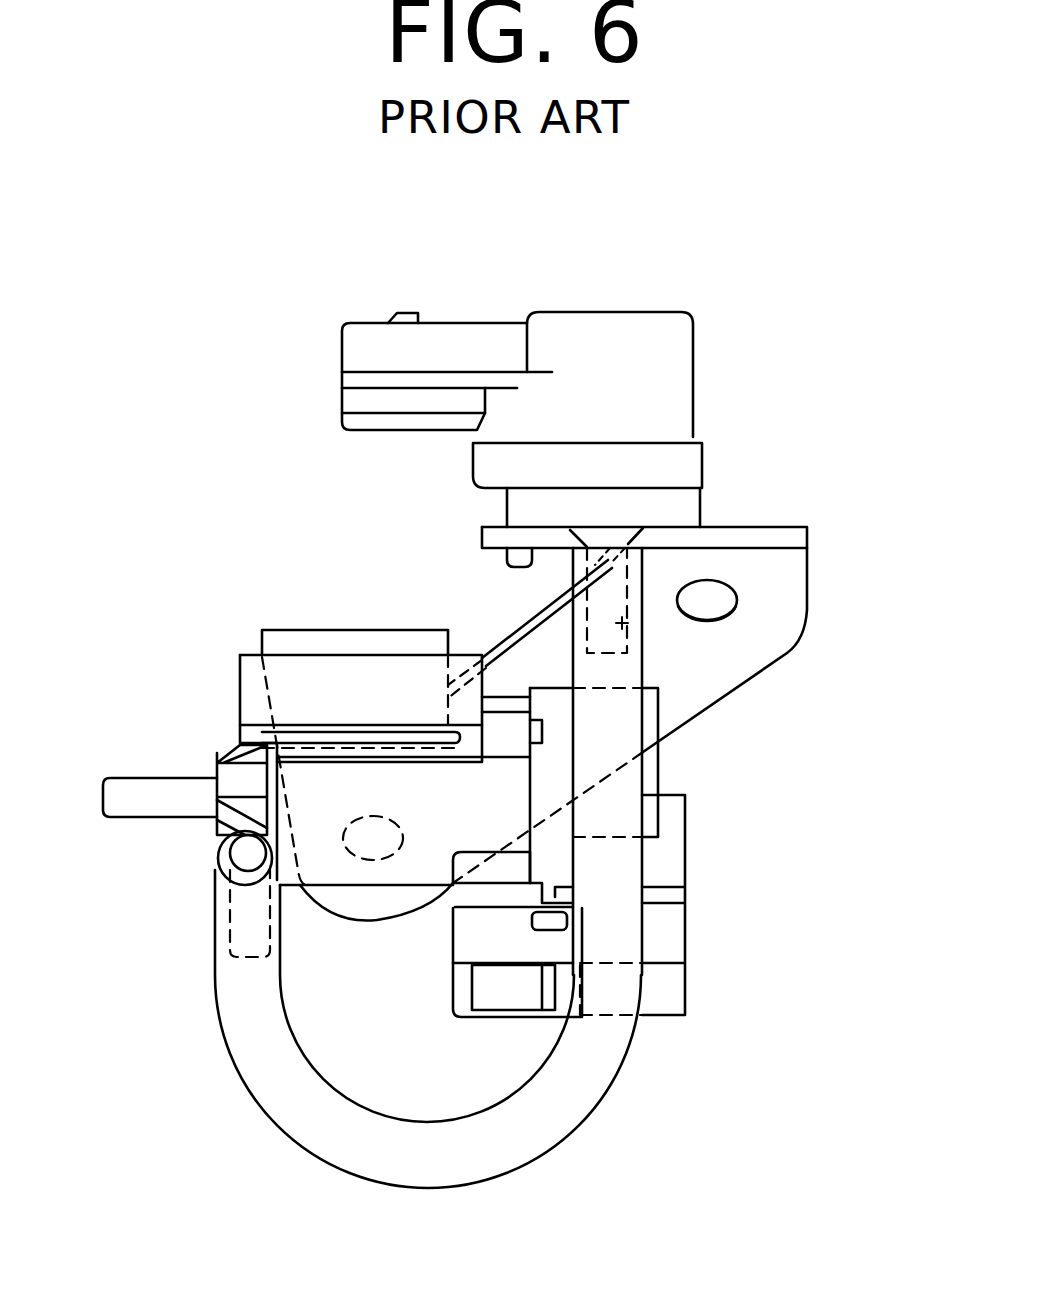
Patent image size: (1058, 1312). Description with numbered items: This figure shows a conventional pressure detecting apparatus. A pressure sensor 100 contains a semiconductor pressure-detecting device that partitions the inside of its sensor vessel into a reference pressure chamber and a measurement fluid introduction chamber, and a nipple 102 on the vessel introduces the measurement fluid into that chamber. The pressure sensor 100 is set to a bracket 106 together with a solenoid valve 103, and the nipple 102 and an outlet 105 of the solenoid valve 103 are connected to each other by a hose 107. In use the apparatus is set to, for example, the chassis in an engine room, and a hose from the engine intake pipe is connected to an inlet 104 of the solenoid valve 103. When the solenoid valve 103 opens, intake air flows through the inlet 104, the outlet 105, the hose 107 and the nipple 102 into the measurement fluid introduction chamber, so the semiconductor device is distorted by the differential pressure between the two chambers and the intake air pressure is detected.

The pressure sensor 100 is at (703, 362).
The nipple 102 is at (642, 623).
The solenoid valve 103 is at (285, 624).
The inlet 104 is at (143, 778).
The outlet 105 is at (217, 848).
The bracket 106 is at (808, 613).
The hose 107 is at (612, 1090).